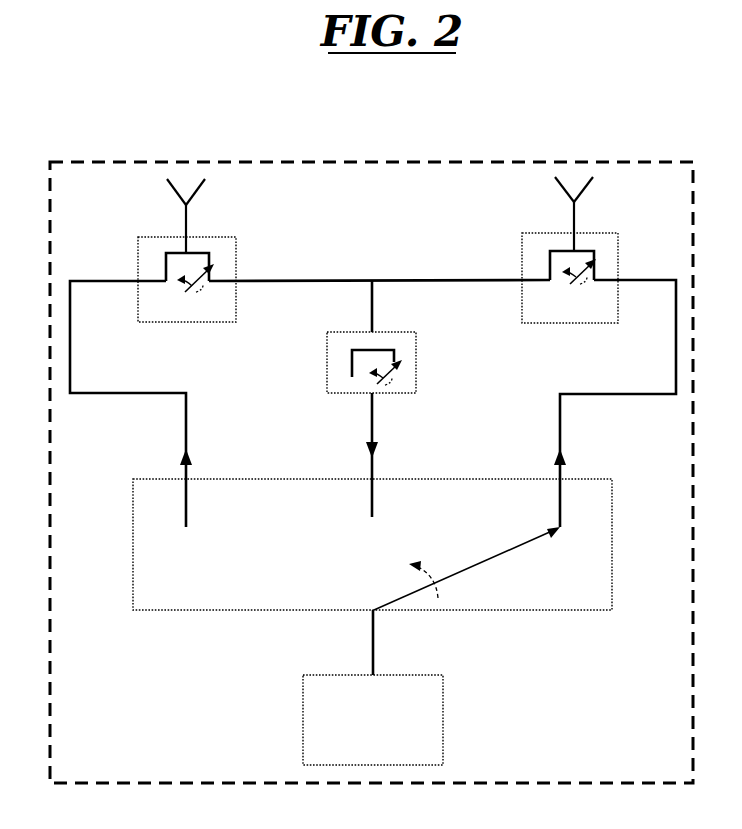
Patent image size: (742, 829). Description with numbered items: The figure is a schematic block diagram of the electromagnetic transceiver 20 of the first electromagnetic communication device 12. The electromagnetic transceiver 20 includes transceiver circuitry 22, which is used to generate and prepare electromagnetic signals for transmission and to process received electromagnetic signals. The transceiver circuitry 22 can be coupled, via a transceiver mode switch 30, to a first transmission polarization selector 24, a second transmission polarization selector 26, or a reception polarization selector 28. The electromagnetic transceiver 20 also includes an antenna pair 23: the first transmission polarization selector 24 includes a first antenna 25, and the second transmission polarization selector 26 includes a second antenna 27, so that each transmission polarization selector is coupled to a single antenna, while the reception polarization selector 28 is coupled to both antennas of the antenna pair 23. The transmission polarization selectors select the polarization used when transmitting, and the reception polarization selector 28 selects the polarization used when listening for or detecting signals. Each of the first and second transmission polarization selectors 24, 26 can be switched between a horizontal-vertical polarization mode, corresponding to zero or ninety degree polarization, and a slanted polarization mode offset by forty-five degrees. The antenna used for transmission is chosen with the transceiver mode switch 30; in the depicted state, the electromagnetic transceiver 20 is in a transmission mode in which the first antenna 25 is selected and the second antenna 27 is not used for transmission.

The electromagnetic communication device 12 is at (436, 138).
The electromagnetic transceiver 20 is at (284, 162).
The transceiver circuitry 22 is at (444, 717).
The antenna pair 23 is at (452, 184).
The first transmission polarization selector 24 is at (620, 254).
The first antenna 25 is at (573, 230).
The second transmission polarization selector 26 is at (237, 264).
The second antenna 27 is at (187, 228).
The reception polarization selector 28 is at (418, 373).
The transceiver mode switch 30 is at (472, 565).